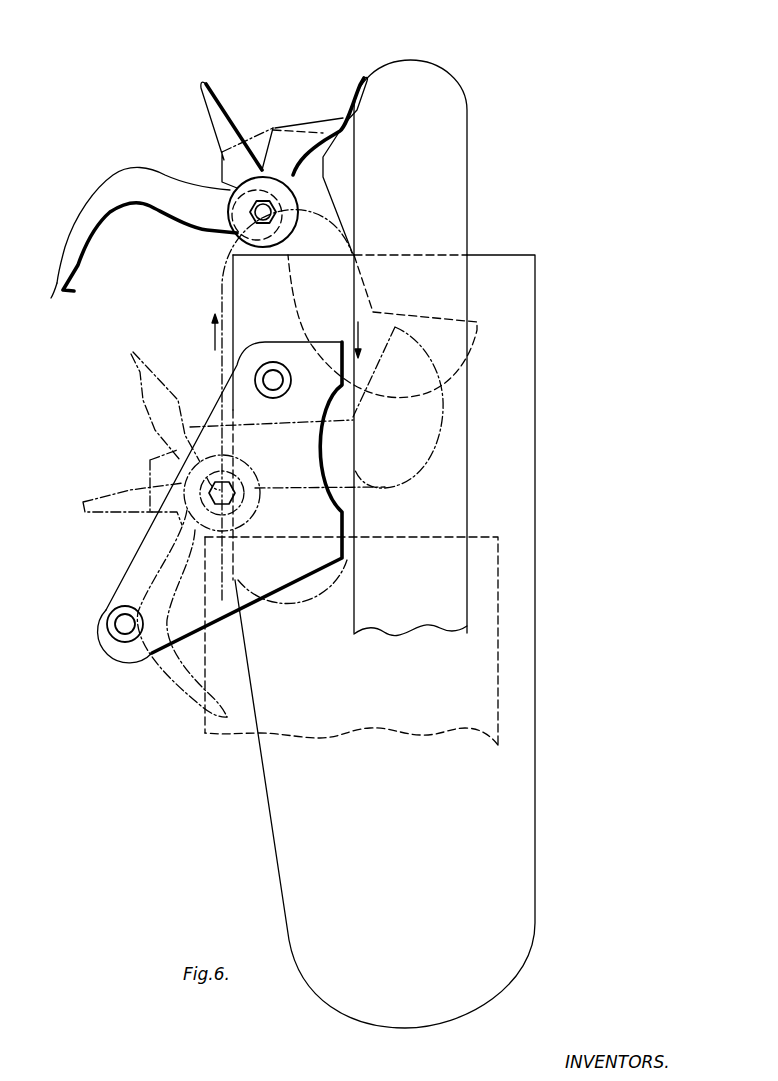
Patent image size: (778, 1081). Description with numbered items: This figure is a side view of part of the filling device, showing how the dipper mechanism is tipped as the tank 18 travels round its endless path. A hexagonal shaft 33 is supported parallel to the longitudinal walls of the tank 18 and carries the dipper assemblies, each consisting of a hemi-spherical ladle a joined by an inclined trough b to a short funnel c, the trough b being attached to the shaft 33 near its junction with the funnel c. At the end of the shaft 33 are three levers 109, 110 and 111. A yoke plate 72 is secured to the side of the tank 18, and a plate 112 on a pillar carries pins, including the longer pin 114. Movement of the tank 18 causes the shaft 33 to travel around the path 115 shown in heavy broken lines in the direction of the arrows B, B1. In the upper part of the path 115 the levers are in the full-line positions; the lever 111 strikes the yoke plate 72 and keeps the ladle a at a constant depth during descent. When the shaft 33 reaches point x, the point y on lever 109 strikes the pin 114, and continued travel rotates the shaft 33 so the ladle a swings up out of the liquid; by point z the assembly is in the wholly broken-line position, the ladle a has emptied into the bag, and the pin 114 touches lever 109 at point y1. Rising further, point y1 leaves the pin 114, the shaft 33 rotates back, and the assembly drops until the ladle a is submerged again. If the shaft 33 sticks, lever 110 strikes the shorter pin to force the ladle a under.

The tank 18 is at (499, 558).
The yoke plate 72 is at (468, 507).
The plate 112 is at (120, 585).
The pin 114 is at (107, 620).
The hexagonal shaft 33 is at (253, 207).
The lever 110 is at (210, 103).
The lever 111 is at (347, 103).
The trough b is at (330, 188).
The short funnel c is at (263, 140).
The lever 109 is at (72, 278).
The point on lever 109 y1 is at (125, 665).
The point on lever 109 y is at (212, 752).
The path 115 is at (222, 273).
The hemi-spherical ladle a is at (448, 373).
The point on path 115 x is at (335, 588).
The point on path 115 z is at (207, 477).
The arrow B is at (365, 340).
The arrow B1 is at (204, 330).